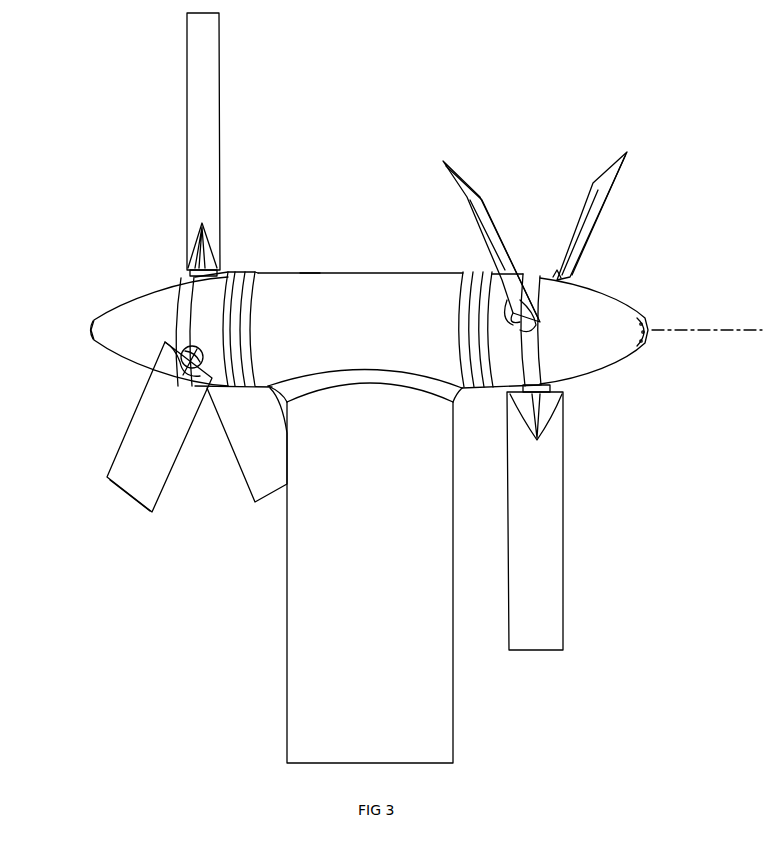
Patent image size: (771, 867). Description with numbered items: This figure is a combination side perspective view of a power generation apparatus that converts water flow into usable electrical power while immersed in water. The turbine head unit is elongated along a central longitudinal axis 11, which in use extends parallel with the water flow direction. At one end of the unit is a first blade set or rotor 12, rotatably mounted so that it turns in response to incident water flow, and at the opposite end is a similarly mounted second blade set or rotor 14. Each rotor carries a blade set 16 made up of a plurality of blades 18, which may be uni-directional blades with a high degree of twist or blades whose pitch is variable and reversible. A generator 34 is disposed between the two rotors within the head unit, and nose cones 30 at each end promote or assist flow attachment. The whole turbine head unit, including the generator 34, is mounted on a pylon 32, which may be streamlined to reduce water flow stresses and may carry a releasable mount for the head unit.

The central longitudinal axis 11 is at (752, 325).
The first blade set or rotor 12 is at (605, 377).
The second blade set or rotor 14 is at (102, 355).
The blade set 16 is at (186, 97).
The blade 18 is at (187, 178).
The nose cone 30 is at (95, 310).
The pylon 32 is at (458, 731).
The generator 34 is at (308, 268).